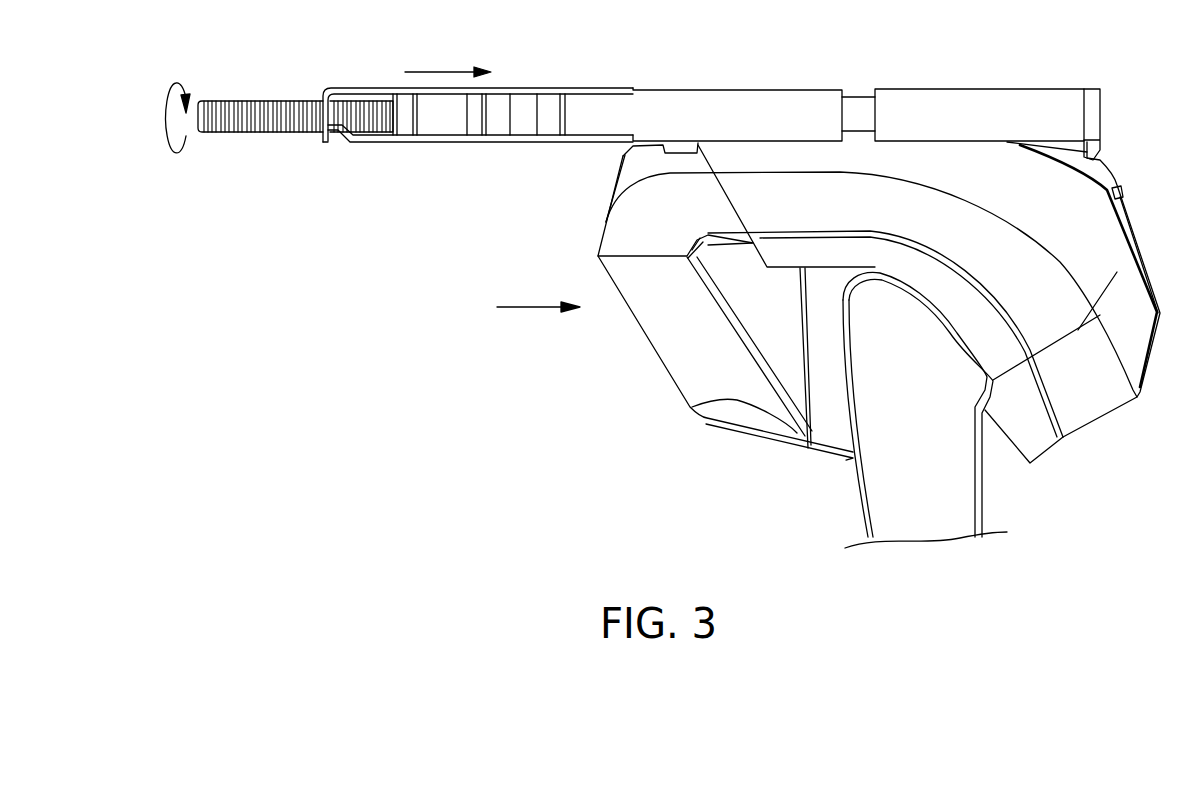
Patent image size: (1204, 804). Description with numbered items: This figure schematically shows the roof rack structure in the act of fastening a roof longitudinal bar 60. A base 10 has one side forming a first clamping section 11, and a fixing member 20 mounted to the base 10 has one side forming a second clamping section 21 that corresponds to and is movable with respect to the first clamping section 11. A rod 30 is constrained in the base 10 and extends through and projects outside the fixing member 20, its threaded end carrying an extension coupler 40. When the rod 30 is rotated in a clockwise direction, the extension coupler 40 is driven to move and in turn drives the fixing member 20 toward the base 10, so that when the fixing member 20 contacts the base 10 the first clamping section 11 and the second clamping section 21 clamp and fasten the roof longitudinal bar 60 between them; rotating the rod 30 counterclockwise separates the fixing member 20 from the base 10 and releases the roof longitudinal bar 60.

The base 10 is at (1073, 230).
The first clamping section 11 is at (1027, 423).
The fixing member 20 is at (643, 199).
The second clamping section 21 is at (835, 422).
The rod 30 is at (855, 110).
The extension coupler 40 is at (511, 88).
The roof longitudinal bar 60 is at (935, 477).